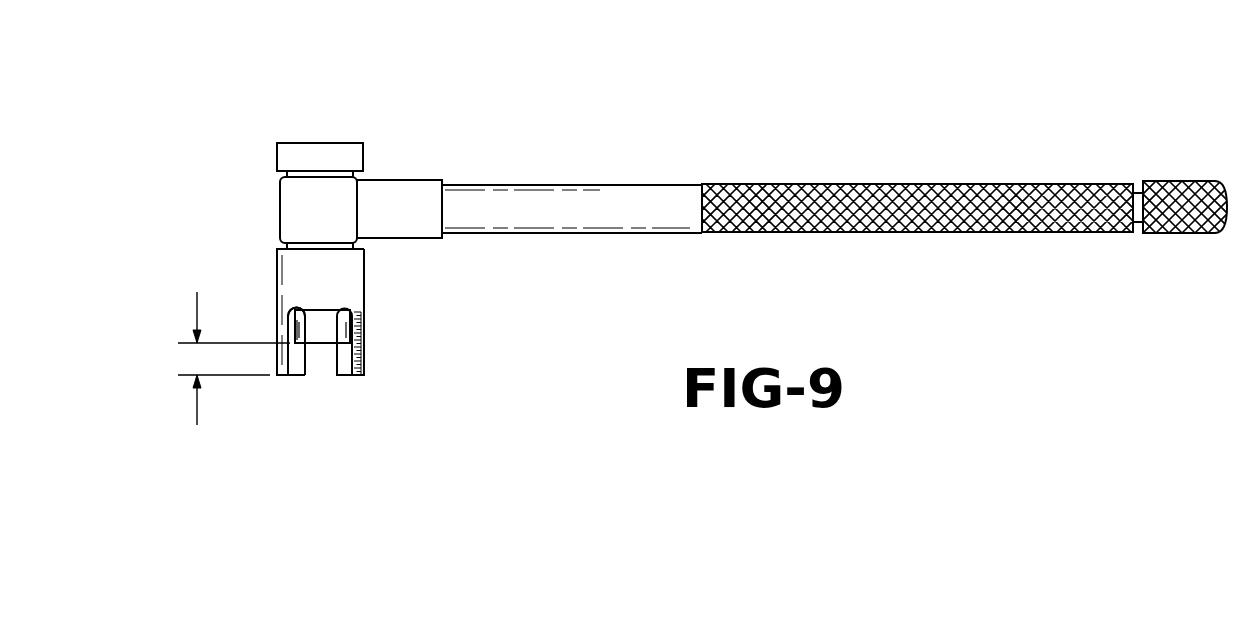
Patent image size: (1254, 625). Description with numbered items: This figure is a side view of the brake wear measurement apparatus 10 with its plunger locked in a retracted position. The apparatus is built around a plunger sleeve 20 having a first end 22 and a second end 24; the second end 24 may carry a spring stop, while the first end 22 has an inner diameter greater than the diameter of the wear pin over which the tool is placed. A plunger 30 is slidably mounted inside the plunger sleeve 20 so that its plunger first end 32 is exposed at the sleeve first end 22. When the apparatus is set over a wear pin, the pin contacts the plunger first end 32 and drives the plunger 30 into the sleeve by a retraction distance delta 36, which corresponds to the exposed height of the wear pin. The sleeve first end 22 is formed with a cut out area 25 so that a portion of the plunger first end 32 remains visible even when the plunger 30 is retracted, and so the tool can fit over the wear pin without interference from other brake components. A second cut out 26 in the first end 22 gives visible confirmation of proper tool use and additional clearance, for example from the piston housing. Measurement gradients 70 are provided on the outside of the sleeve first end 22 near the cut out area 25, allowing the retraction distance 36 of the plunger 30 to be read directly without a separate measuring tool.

The brake wear measurement apparatus 10 is at (551, 156).
The plunger sleeve 20 is at (305, 283).
The plunger sleeve first end 22 is at (358, 373).
The plunger sleeve second end 24 is at (288, 160).
The cut out area 25 is at (298, 330).
The second cut out 26 is at (305, 372).
The plunger 30 is at (323, 323).
The plunger first end 32 is at (317, 345).
The retraction distance delta 36 is at (234, 358).
The measurement gradients 70 is at (362, 343).